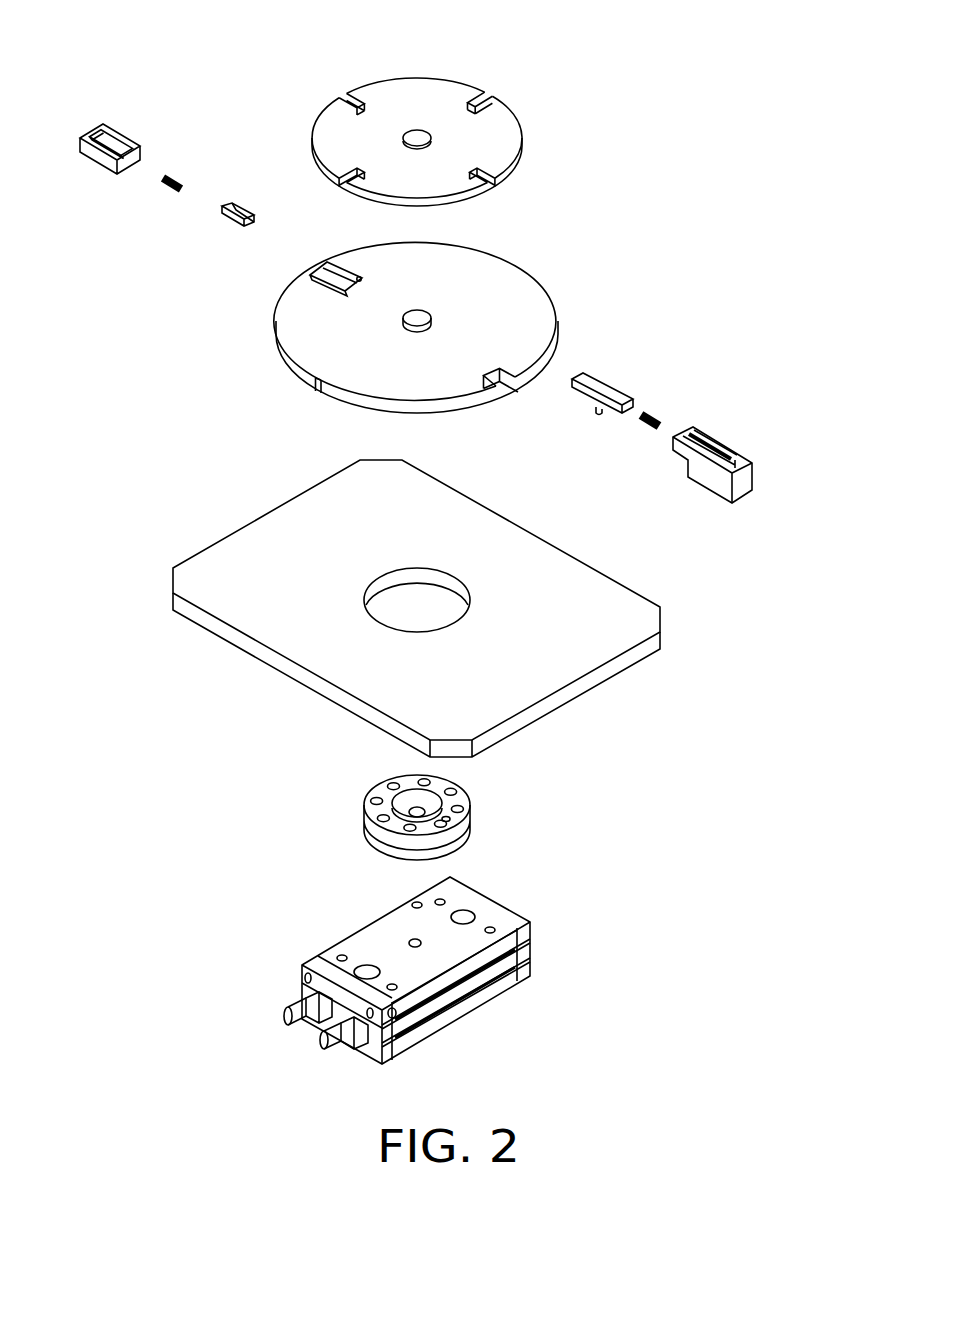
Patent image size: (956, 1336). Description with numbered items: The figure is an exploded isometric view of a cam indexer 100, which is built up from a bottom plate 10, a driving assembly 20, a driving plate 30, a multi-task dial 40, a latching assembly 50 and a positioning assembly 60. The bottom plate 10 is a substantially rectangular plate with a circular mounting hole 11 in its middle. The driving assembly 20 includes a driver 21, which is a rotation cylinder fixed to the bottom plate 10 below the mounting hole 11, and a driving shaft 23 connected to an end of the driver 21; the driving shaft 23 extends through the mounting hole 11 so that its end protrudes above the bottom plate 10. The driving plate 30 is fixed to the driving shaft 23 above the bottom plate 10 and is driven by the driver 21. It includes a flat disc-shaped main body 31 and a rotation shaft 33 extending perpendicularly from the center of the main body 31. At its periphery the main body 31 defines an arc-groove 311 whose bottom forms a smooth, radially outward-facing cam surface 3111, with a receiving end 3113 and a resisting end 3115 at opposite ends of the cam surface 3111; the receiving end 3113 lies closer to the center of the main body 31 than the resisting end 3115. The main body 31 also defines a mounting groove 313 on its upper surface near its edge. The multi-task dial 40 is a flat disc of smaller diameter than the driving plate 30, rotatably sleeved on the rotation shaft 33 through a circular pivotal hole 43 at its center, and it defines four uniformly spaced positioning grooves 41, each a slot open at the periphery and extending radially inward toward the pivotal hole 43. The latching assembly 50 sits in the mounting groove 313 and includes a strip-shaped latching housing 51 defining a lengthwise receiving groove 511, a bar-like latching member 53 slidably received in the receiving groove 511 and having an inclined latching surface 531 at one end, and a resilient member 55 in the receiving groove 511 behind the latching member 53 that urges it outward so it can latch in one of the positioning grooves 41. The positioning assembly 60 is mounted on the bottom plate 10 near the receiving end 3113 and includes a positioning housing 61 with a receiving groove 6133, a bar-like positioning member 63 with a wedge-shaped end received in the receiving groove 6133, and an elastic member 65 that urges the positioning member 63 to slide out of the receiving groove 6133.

The cam indexer 100 is at (345, 45).
The bottom plate 10 is at (387, 608).
The mounting hole 11 is at (438, 612).
The driving assembly 20 is at (379, 919).
The driver 21 is at (395, 927).
The driving shaft 23 is at (385, 837).
The driving plate 30 is at (441, 329).
The main body 31 is at (423, 334).
The arc-groove 311 is at (404, 391).
The cam surface 3111 is at (420, 405).
The receiving end 3113 is at (493, 387).
The resisting end 3115 is at (277, 402).
The mounting groove 313 is at (318, 275).
The rotation shaft 33 is at (420, 308).
The multi-task dial 40 is at (394, 116).
The positioning grooves 41 is at (483, 98).
The pivotal hole 43 is at (416, 134).
The latching assembly 50 is at (171, 186).
The latching housing 51 is at (117, 149).
The receiving groove 511 is at (110, 136).
The latching member 53 is at (242, 216).
The latching surface 531 is at (242, 210).
The resilient member 55 is at (167, 188).
The positioning assembly 60 is at (707, 413).
The positioning housing 61 is at (758, 451).
The receiving groove 6133 is at (733, 446).
The positioning member 63 is at (608, 380).
The elastic member 65 is at (657, 410).